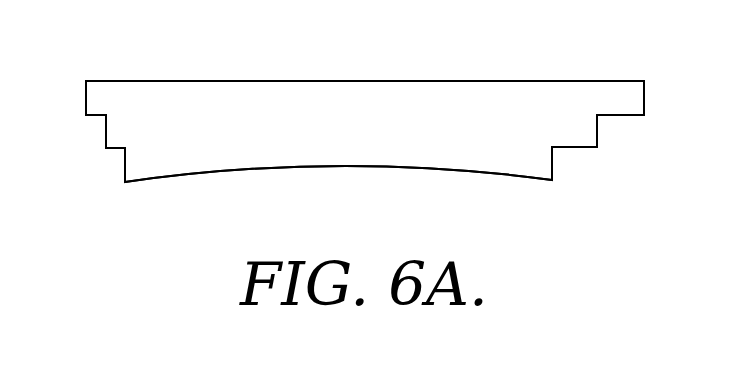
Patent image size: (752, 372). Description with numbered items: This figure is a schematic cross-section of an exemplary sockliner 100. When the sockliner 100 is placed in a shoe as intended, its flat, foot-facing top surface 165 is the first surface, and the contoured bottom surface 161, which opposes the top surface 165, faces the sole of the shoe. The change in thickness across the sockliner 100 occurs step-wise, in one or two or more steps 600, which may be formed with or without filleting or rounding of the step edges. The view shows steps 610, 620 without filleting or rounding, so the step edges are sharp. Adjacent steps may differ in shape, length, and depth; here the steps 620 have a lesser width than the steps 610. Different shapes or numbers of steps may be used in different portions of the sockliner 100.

The sockliner 100 is at (585, 263).
The top surface 165 is at (185, 81).
The bottom surface 161 is at (330, 167).
The steps 600 is at (115, 127).
The steps 620 is at (115, 148).
The steps 610 is at (573, 148).